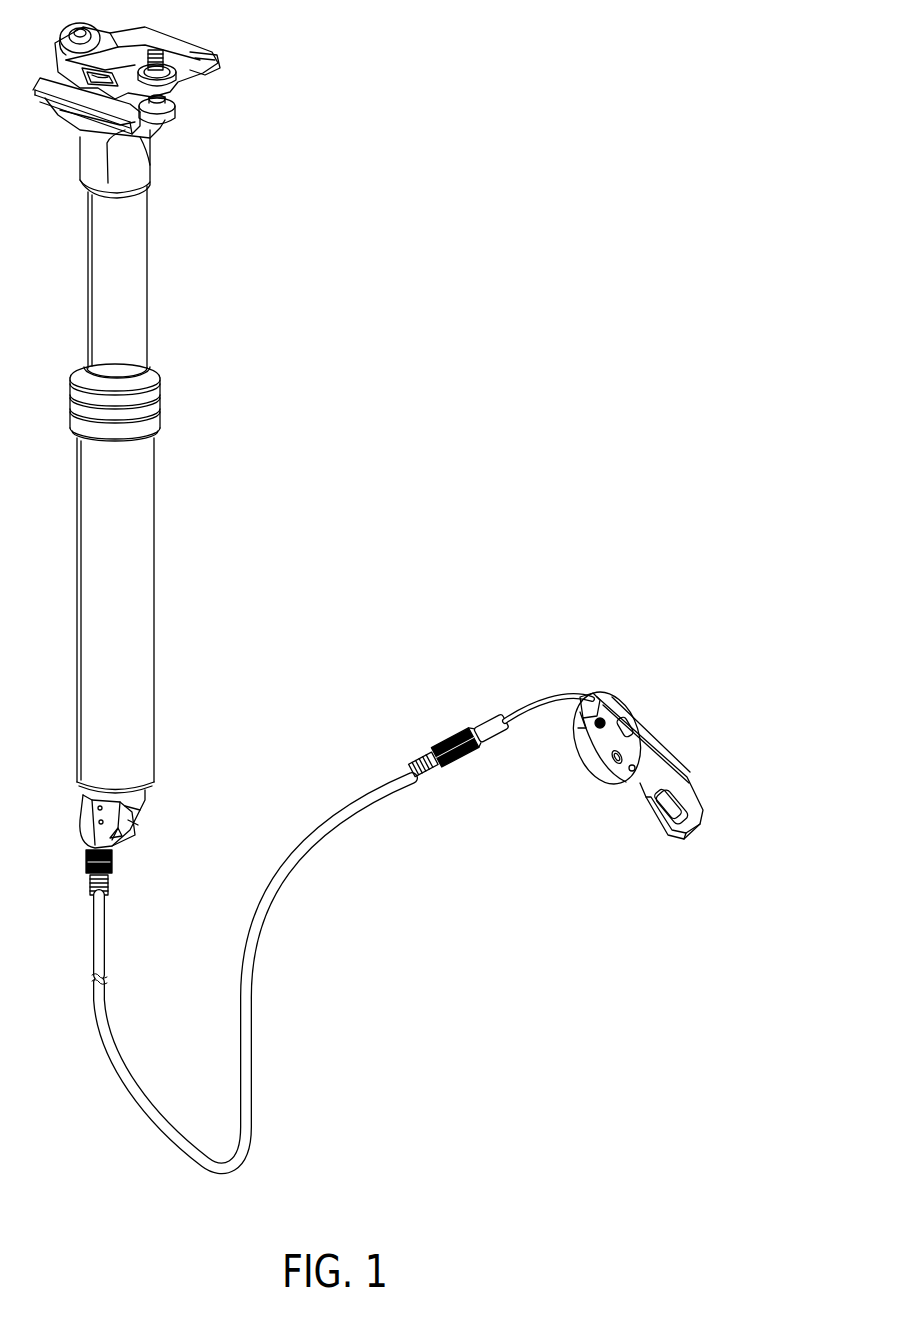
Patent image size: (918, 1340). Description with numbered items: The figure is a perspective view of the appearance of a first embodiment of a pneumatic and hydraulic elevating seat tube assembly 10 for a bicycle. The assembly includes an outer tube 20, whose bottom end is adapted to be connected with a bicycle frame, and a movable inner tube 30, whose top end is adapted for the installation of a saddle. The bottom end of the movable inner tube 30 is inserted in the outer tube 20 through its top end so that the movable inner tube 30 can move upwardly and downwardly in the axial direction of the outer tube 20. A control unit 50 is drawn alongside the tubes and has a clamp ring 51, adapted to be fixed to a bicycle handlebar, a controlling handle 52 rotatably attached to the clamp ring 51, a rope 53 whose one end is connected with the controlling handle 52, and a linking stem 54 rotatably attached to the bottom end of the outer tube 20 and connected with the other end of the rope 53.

The pneumatic and hydraulic elevating seat tube assembly 10 is at (396, 200).
The outer tube 20 is at (128, 600).
The movable inner tube 30 is at (128, 284).
The control unit 50 is at (625, 599).
The clamp ring 51 is at (607, 755).
The controlling handle 52 is at (659, 777).
The rope 53 is at (399, 781).
The linking stem 54 is at (184, 789).